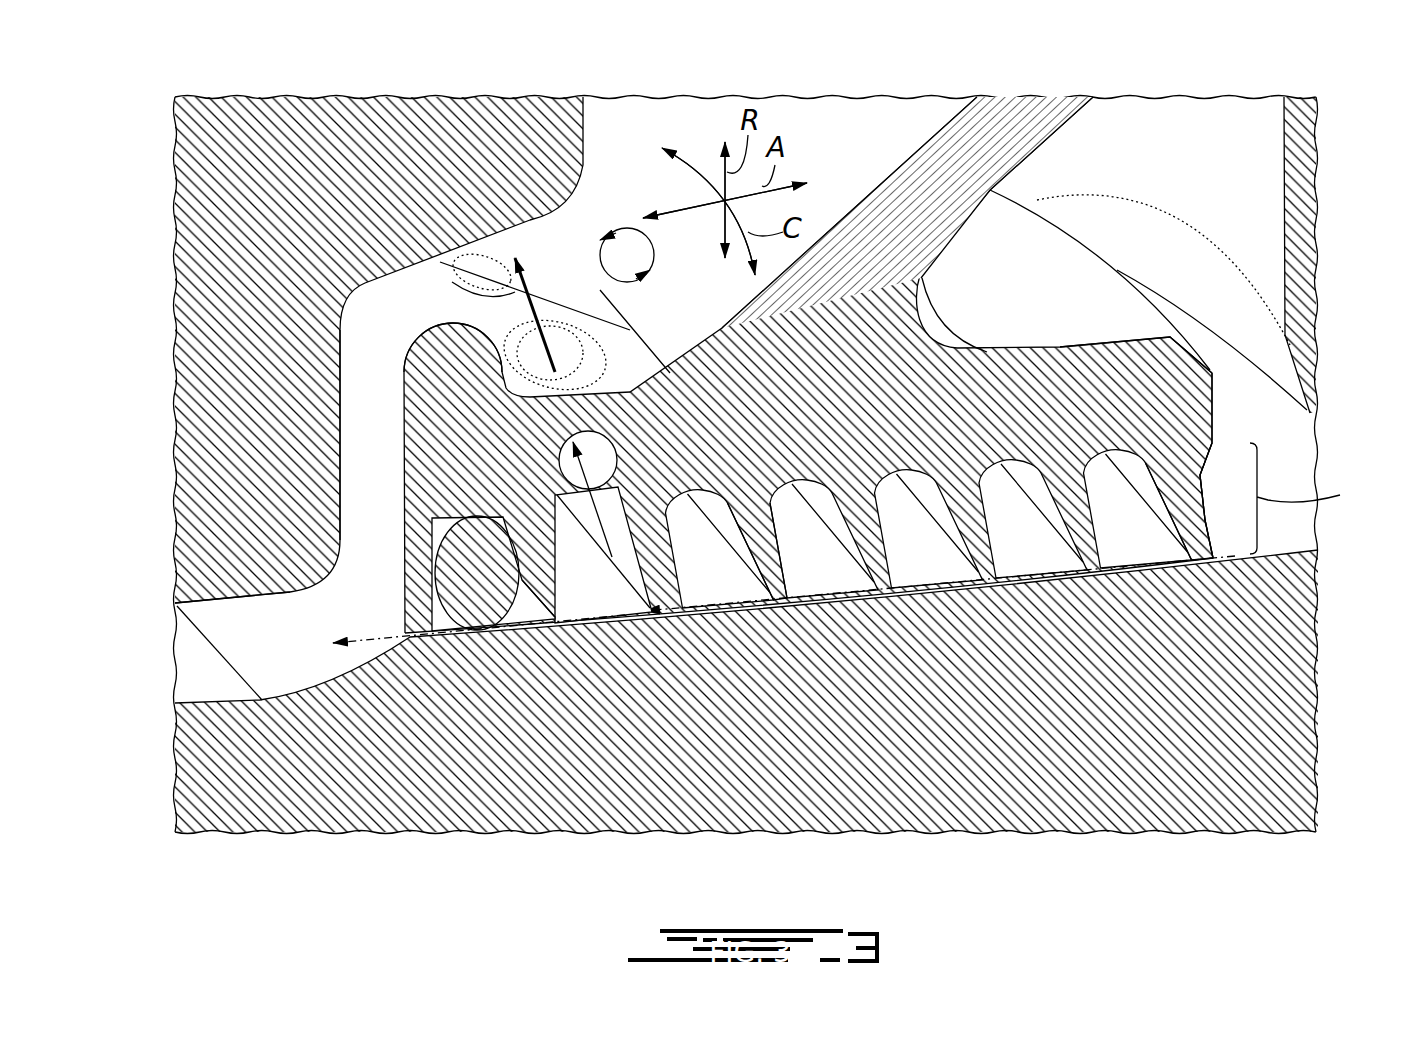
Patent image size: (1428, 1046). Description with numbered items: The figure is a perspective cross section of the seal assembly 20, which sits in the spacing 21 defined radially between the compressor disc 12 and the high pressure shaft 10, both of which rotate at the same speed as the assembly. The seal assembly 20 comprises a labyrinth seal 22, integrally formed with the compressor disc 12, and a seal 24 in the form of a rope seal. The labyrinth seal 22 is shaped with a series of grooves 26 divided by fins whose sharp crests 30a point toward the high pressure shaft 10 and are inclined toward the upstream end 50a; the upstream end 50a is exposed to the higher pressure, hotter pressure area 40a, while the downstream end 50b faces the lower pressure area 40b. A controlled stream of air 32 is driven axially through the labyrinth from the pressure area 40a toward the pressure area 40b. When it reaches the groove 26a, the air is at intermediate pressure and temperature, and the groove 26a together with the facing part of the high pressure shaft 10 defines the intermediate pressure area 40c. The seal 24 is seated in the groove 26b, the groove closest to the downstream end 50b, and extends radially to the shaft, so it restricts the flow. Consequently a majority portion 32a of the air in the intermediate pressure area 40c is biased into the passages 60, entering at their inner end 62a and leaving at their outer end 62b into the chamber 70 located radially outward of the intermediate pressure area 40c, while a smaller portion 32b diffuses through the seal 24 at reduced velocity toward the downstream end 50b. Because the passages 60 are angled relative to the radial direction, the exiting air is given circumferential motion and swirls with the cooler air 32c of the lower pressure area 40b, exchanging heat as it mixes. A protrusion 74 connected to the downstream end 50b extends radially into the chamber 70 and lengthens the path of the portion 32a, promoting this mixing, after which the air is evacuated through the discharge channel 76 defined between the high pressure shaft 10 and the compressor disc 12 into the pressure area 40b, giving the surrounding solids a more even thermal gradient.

The high pressure shaft 10 is at (1265, 720).
The compressor disc 12 is at (1020, 122).
The seal assembly 20 is at (1290, 430).
The spacing 21 is at (1311, 498).
The labyrinth seal 22 is at (1068, 408).
The seal 24 is at (532, 600).
The grooves 26 is at (922, 542).
The groove 26a is at (604, 562).
The groove 26b is at (600, 585).
The sharp crest 30a is at (1031, 578).
The stream of air 32 is at (722, 606).
The portion of the stream of air 32a is at (463, 262).
The portion of the stream of air 32b is at (482, 592).
The air of the lower pressure area 32c is at (655, 258).
The pressure area 40a is at (1250, 140).
The pressure area 40b is at (220, 666).
The intermediate pressure area 40c is at (640, 612).
The upstream end 50a is at (1213, 527).
The downstream end 50b is at (393, 570).
The passages 60 is at (583, 360).
The inner end 62a is at (612, 557).
The outer end 62b is at (545, 327).
The chamber 70 is at (601, 189).
The protrusion 74 is at (440, 338).
The discharge channel 76 is at (355, 384).